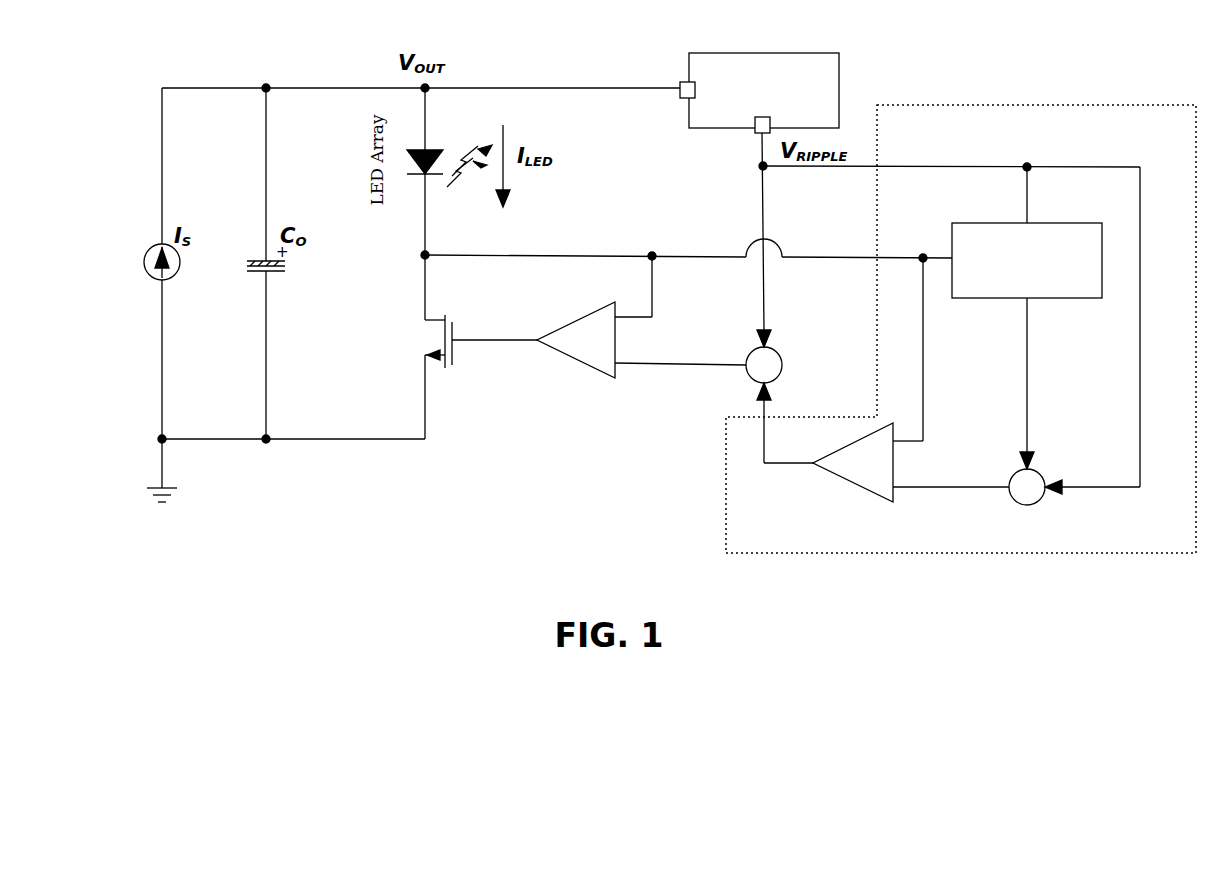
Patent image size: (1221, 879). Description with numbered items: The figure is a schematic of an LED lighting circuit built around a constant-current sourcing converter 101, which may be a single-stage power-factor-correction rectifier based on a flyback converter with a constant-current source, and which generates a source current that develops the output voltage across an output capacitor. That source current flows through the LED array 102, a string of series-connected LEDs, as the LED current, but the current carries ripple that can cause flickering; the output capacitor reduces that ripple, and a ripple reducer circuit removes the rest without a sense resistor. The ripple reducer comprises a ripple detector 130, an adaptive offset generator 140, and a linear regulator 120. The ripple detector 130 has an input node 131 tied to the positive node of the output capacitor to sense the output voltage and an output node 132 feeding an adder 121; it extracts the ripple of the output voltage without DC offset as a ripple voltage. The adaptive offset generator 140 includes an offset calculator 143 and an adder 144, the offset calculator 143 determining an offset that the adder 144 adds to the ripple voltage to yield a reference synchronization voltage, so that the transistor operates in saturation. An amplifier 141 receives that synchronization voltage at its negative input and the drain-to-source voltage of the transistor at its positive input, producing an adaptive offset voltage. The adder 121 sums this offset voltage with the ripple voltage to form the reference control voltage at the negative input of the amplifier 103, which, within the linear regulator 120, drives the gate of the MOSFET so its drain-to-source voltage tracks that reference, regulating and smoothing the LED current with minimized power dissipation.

The constant-current sourcing converter 101 is at (146, 258).
The LED array 102 is at (437, 143).
The amplifier 103 is at (575, 318).
The linear regulator 120 is at (518, 374).
The adder 121 is at (783, 365).
The ripple detector 130 is at (753, 52).
The input node 131 is at (683, 102).
The output node 132 is at (758, 136).
The adaptive offset generator 140 is at (960, 104).
The amplifier 141 is at (843, 480).
The offset calculator 143 is at (1052, 298).
The adder 144 is at (1015, 472).